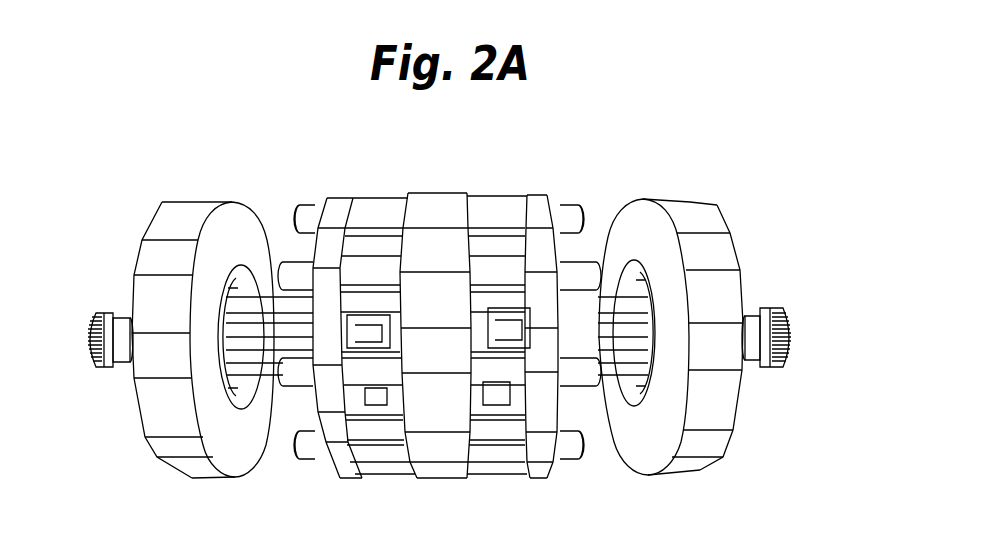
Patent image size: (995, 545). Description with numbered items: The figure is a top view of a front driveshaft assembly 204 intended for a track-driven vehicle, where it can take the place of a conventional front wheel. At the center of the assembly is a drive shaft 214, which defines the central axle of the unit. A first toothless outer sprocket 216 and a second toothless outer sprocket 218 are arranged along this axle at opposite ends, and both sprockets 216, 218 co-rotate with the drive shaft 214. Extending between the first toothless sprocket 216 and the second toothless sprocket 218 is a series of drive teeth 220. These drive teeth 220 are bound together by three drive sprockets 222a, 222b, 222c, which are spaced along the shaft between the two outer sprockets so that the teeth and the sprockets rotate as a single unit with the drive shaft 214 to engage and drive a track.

The front driveshaft assembly 204 is at (754, 171).
The drive shaft 214 is at (108, 313).
The first toothless outer sprocket 216 is at (200, 205).
The second toothless outer sprocket 218 is at (668, 197).
The drive teeth 220 is at (377, 207).
The drive sprocket 222a is at (349, 480).
The drive sprocket 222b is at (458, 480).
The drive sprocket 222c is at (540, 205).